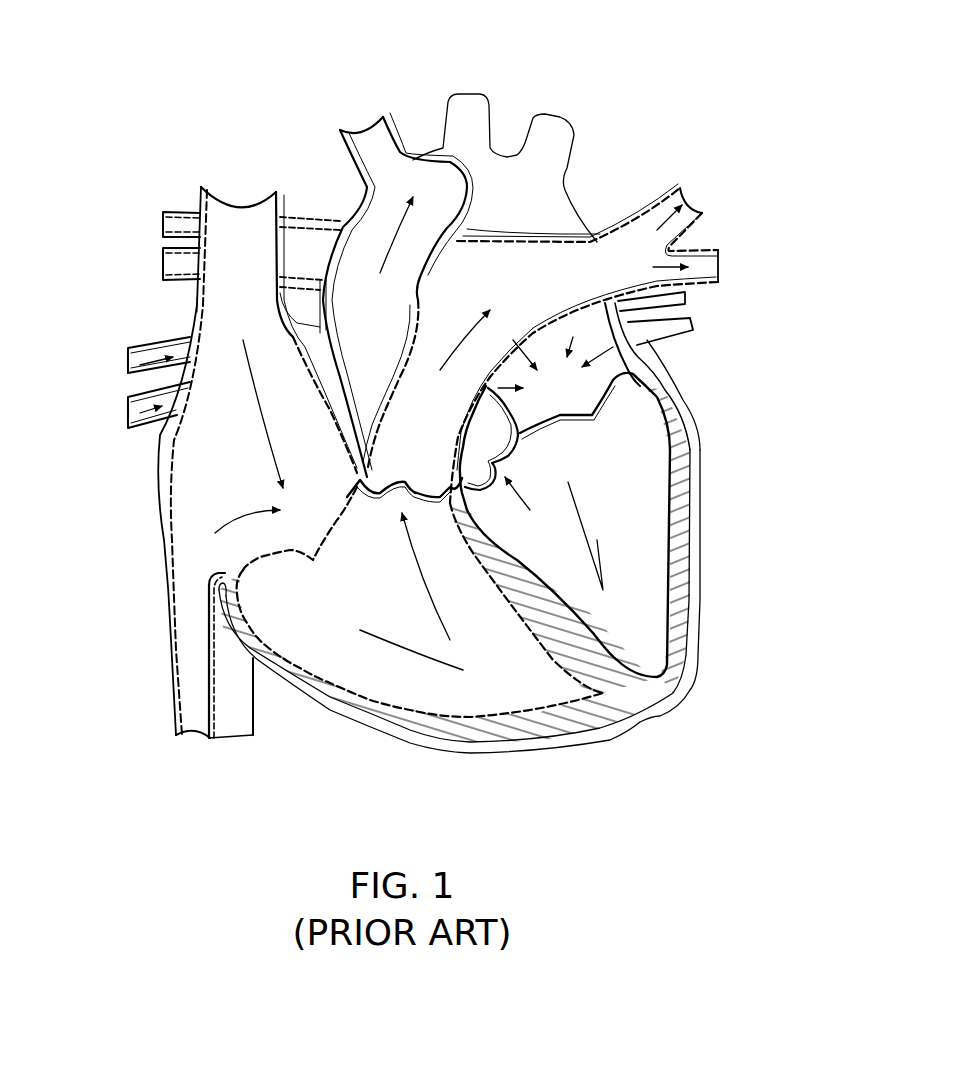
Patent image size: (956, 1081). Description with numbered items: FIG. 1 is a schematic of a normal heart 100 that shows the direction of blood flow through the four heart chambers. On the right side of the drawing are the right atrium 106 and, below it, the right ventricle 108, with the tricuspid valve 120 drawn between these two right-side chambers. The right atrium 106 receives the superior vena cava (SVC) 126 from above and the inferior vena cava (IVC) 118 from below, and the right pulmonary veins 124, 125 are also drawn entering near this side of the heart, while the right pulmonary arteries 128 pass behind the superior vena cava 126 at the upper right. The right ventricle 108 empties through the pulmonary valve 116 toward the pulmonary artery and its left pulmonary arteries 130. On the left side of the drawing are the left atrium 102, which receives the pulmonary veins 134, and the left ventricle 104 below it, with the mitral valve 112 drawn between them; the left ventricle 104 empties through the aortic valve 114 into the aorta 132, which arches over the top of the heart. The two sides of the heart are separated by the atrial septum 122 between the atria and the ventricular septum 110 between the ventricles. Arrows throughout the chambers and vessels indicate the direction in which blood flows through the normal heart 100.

The heart 100 is at (186, 66).
The left atrium 102 is at (567, 393).
The left ventricle 104 is at (640, 520).
The right atrium 106 is at (220, 476).
The right ventricle 108 is at (527, 690).
The ventricular septum 110 is at (547, 597).
The mitral valve 112 is at (597, 415).
The aortic valve 114 is at (527, 442).
The pulmonary valve 116 is at (380, 500).
The inferior vena cava (IVC) 118 is at (240, 720).
The tricuspid valve 120 is at (317, 537).
The atrial septum 122 is at (343, 422).
The right pulmonary vein 124 is at (128, 357).
The right pulmonary vein 125 is at (130, 403).
The superior vena cava (SVC) 126 is at (193, 305).
The right pulmonary arteries 128 is at (167, 220).
The left pulmonary arteries 130 is at (702, 213).
The aorta 132 is at (555, 132).
The pulmonary veins 134 is at (685, 295).